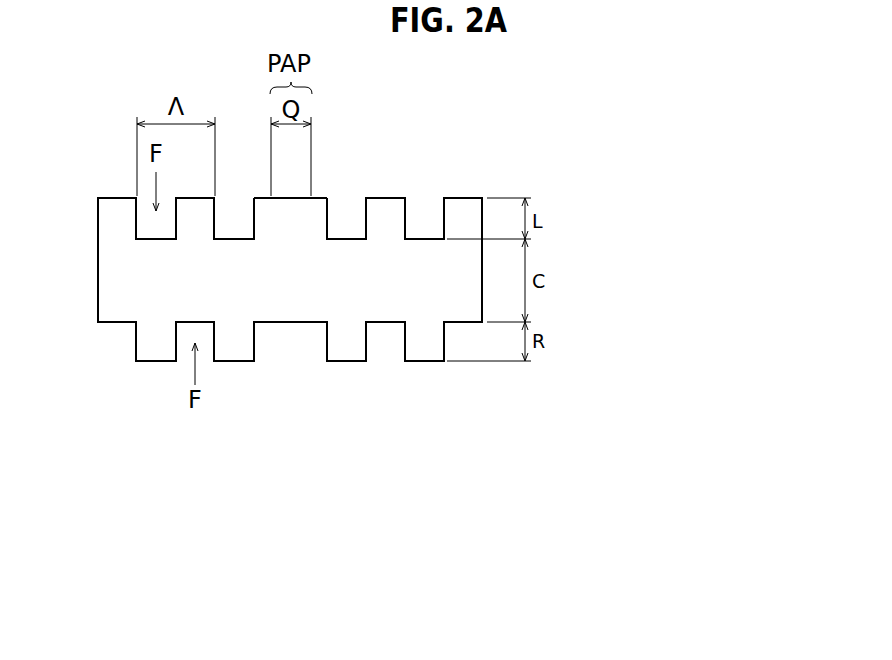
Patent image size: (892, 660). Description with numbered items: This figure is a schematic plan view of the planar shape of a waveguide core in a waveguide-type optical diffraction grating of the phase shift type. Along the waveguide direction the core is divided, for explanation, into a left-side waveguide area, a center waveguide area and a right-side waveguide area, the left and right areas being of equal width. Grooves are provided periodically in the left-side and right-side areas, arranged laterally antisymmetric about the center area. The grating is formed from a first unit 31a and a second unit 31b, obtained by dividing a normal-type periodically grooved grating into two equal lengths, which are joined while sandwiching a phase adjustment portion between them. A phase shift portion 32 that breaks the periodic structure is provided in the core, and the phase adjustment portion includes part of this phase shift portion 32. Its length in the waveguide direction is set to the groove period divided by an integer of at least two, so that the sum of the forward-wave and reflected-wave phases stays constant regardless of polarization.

The first unit 31a is at (290, 200).
The second unit 31b is at (482, 363).
The phase shift portion 32 is at (320, 213).